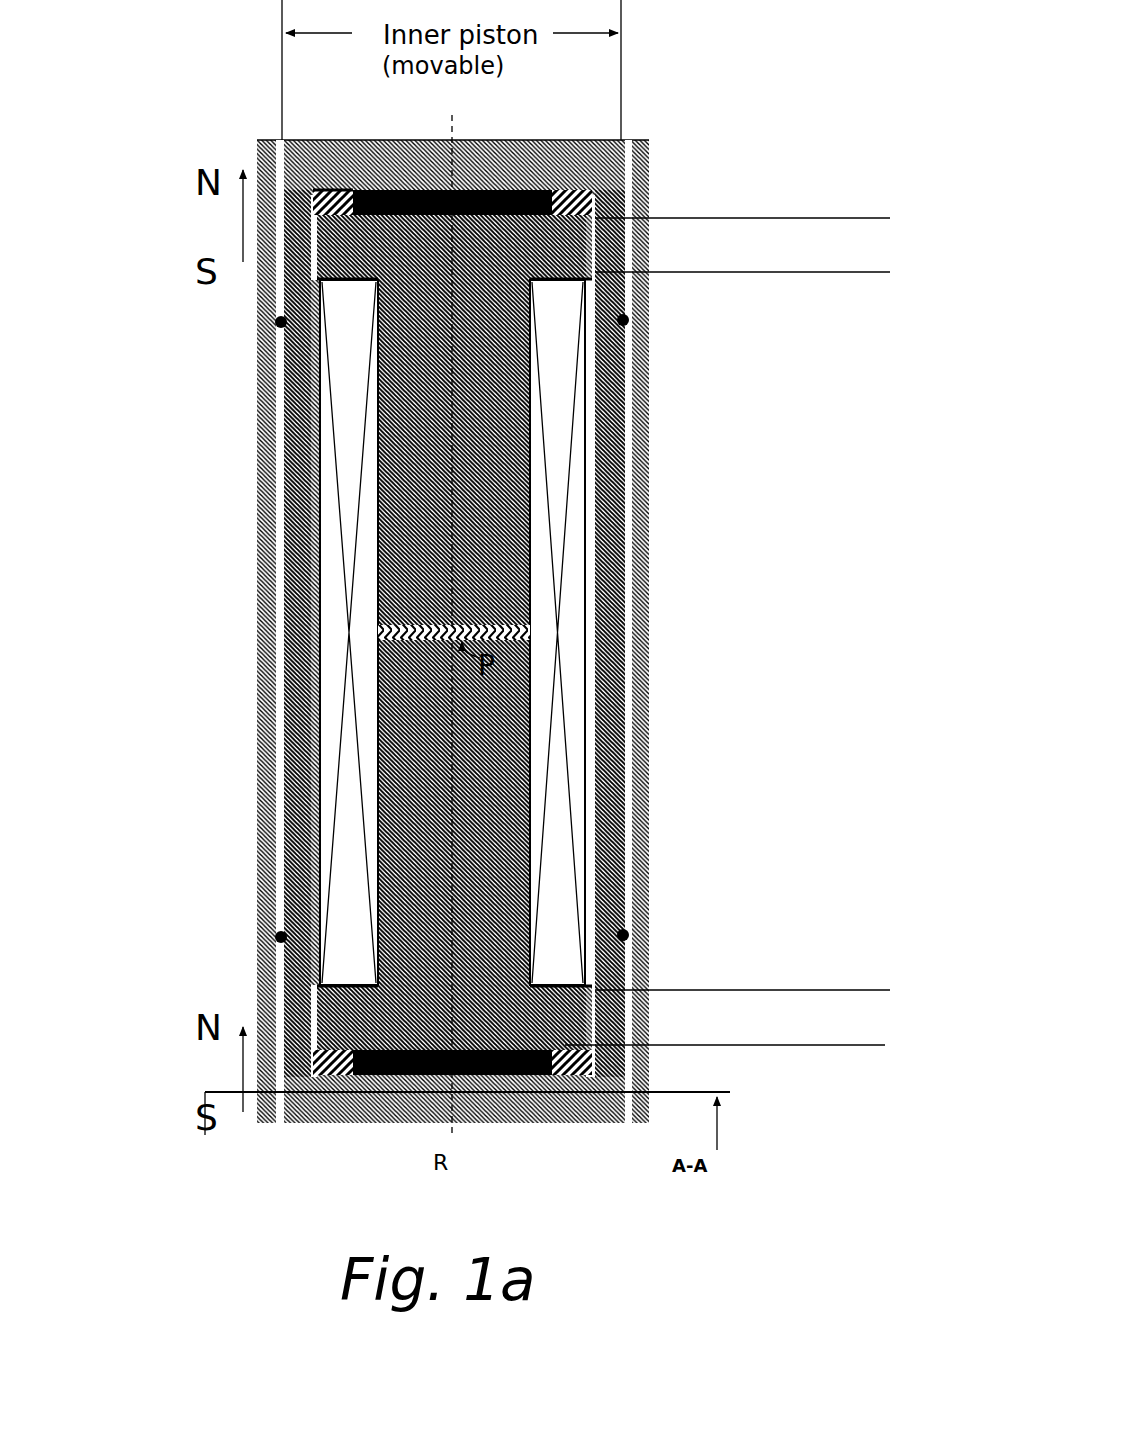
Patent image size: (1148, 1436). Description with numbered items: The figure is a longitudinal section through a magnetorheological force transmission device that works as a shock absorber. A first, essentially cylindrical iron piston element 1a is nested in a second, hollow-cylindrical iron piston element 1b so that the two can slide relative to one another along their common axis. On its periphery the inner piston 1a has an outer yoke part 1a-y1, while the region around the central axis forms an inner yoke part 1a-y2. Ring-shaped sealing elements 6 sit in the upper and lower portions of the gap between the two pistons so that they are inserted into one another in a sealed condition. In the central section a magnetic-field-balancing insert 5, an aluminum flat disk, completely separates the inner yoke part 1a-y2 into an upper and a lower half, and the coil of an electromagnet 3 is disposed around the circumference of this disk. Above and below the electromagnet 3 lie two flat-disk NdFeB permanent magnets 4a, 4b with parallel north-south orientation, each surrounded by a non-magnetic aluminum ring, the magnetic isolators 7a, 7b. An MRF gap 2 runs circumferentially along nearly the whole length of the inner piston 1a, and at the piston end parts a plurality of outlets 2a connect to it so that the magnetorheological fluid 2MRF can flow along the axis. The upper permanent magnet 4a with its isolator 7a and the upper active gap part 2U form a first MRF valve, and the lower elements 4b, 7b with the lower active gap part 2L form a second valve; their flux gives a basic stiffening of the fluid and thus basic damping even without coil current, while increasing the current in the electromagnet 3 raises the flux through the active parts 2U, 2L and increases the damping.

The first piston element 1a is at (598, 157).
The second piston element 1b is at (644, 157).
The MRF gap 2 is at (308, 461).
The magnetorheological fluid 2MRF is at (319, 655).
The upper active MRF gap part 2U is at (592, 243).
The lower active MRF gap part 2L is at (602, 1000).
The outlet 2a is at (591, 128).
The electromagnet 3 is at (562, 337).
The first permanent magnet 4a is at (598, 190).
The second permanent magnet 4b is at (518, 1075).
The magnetic-field-balancing insert 5 is at (472, 629).
The sealing element 6 is at (623, 320).
The magnetic isolator 7a is at (324, 196).
The magnetic isolator 7b is at (328, 1072).
The outer yoke part 1a-y1 is at (622, 699).
The inner yoke part 1a-y2 is at (492, 489).